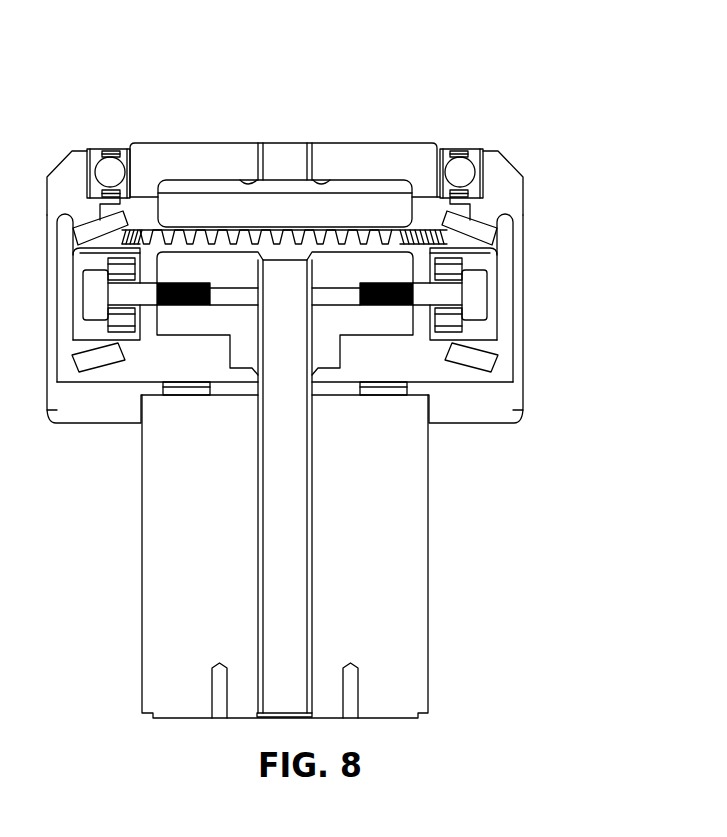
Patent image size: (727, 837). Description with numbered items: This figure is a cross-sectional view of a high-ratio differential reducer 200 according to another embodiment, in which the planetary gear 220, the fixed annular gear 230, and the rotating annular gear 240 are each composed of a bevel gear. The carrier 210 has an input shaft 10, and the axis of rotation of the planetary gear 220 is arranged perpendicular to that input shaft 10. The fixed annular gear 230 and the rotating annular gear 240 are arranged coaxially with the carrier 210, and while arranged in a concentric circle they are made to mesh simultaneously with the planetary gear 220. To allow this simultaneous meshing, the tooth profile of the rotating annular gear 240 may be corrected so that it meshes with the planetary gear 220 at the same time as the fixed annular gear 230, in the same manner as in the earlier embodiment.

The high-ratio differential reducer 200 is at (59, 87).
The carrier 210 is at (395, 325).
The planetary gear 220 is at (488, 345).
The fixed annular gear 230 is at (503, 192).
The rotating annular gear 240 is at (393, 153).
The input shaft 10 is at (293, 603).